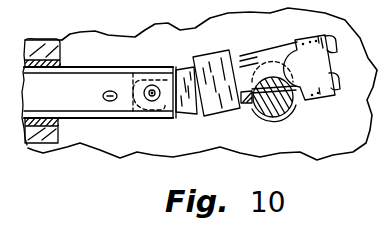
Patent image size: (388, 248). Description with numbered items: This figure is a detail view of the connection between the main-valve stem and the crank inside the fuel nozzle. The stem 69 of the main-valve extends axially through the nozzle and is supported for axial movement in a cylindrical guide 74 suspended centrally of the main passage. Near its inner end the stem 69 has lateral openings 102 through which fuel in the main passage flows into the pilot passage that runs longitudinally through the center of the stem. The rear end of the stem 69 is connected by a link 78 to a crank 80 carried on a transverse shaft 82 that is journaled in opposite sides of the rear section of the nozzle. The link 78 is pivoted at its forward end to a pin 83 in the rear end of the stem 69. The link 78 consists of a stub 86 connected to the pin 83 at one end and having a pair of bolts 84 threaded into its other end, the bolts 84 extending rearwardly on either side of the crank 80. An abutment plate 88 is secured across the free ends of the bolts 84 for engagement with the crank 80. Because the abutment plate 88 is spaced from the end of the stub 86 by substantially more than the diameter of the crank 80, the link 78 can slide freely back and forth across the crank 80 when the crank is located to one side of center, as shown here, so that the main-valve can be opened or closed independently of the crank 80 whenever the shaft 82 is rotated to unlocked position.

The stem 69 is at (86, 66).
The lateral openings 102 is at (100, 96).
The cylindrical guide 74 is at (36, 144).
The pin 83 is at (140, 119).
The stub 86 is at (185, 113).
The link 78 is at (210, 60).
The bolts 84 is at (242, 52).
The crank 80 is at (272, 57).
The transverse shaft 82 is at (281, 118).
The abutment plate 88 is at (337, 62).